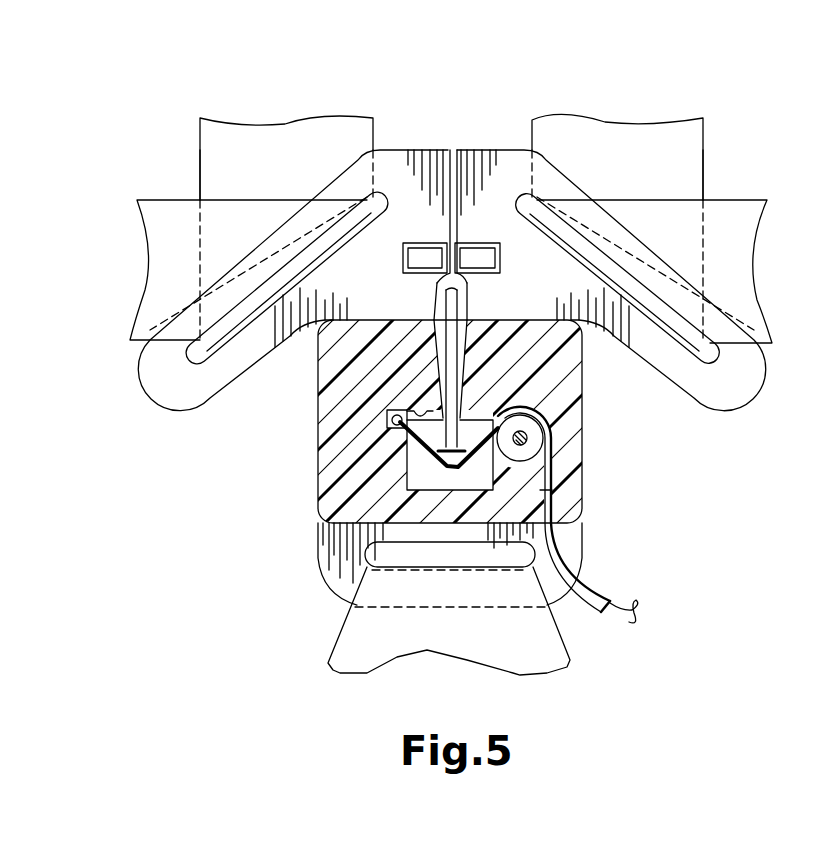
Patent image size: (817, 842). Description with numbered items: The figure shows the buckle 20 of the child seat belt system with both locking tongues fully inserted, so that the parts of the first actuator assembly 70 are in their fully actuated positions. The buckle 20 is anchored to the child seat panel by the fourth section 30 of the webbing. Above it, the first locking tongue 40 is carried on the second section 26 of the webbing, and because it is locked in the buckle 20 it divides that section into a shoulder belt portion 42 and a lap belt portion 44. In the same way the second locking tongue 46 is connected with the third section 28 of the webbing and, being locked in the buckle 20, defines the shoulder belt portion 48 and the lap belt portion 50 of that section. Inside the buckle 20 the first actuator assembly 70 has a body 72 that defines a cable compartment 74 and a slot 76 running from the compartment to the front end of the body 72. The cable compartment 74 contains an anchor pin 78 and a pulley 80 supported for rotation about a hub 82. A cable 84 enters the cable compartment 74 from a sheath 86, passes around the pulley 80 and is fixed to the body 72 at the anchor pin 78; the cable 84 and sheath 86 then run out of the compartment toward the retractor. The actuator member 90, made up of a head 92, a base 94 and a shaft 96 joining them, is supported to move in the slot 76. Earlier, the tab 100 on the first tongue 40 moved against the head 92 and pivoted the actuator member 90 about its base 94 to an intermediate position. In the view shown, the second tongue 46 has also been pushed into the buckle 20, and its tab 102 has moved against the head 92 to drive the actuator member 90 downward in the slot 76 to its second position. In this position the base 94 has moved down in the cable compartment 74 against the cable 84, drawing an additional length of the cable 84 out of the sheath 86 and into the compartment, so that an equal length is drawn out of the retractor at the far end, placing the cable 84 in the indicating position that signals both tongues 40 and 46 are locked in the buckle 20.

The buckle 20 is at (300, 579).
The second section of the webbing 26 is at (186, 130).
The third section of the webbing 28 is at (721, 132).
The fourth section of the webbing 30 is at (353, 638).
The first locking tongue 40 is at (415, 130).
The shoulder belt portion 42 is at (218, 167).
The lap belt portion 44 is at (158, 217).
The second locking tongue 46 is at (492, 130).
The shoulder belt portion 48 is at (683, 157).
The lap belt portion 50 is at (737, 271).
The first actuator assembly 70 is at (300, 368).
The body 72 is at (330, 420).
The cable compartment 74 is at (432, 468).
The slot 76 is at (438, 308).
The anchor pin 78 is at (388, 421).
The pulley 80 is at (540, 410).
The hub 82 is at (526, 441).
The cable 84 is at (617, 603).
The sheath 86 is at (570, 580).
The actuator member 90 is at (482, 288).
The head 92 is at (460, 272).
The base 94 is at (465, 415).
The shaft 96 is at (452, 358).
The tab 100 is at (401, 258).
The tab 102 is at (505, 245).